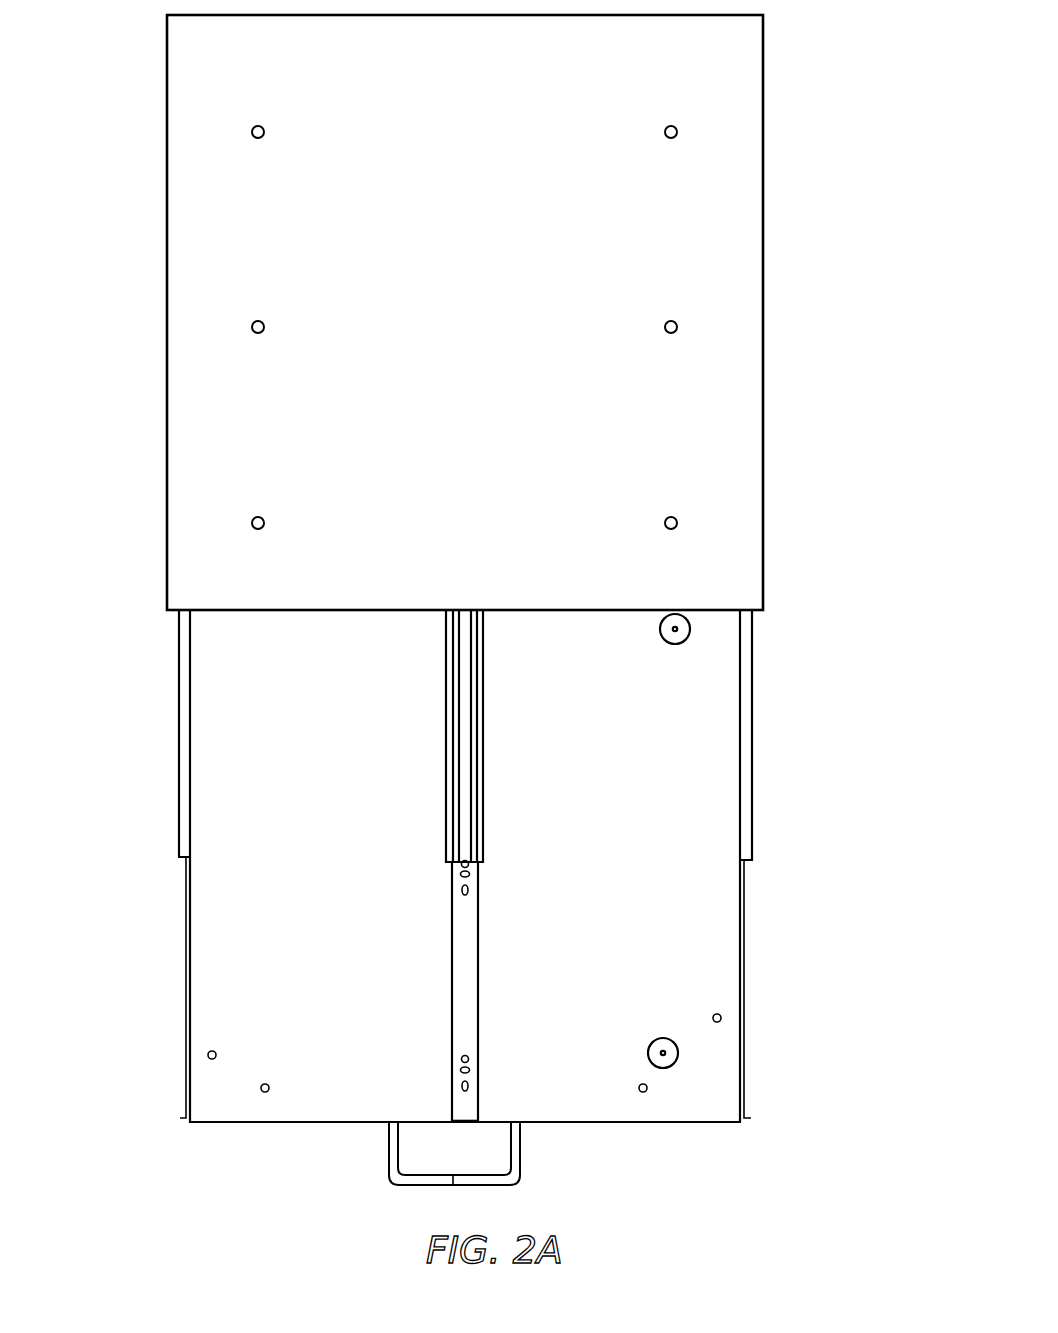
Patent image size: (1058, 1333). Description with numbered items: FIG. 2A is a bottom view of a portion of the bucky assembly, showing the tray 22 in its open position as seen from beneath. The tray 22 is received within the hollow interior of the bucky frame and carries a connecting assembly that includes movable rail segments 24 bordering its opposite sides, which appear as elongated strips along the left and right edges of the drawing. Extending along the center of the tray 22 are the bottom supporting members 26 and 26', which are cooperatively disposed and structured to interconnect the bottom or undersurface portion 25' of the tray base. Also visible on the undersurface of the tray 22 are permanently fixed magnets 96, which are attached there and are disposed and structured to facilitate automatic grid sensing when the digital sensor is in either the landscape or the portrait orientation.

The tray 22 is at (705, 945).
The movable rail segments 24 is at (178, 715).
The bottom or undersurface portion 25' is at (465, 428).
The bottom supporting member 26 is at (529, 736).
The bottom supporting member 26' is at (540, 992).
The permanently fixed magnets 96 is at (688, 637).